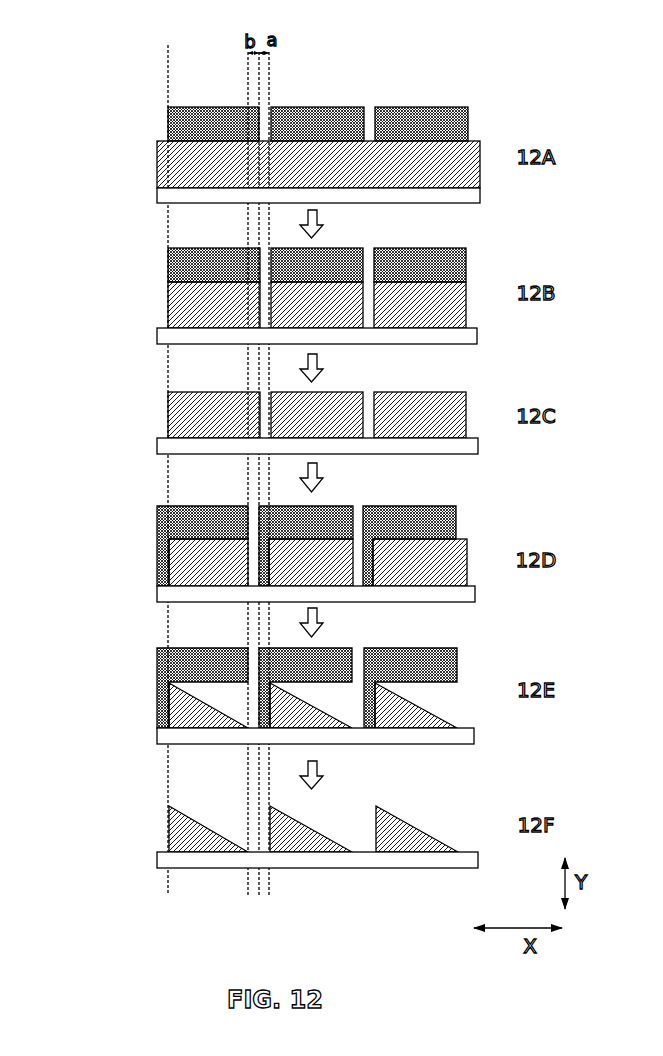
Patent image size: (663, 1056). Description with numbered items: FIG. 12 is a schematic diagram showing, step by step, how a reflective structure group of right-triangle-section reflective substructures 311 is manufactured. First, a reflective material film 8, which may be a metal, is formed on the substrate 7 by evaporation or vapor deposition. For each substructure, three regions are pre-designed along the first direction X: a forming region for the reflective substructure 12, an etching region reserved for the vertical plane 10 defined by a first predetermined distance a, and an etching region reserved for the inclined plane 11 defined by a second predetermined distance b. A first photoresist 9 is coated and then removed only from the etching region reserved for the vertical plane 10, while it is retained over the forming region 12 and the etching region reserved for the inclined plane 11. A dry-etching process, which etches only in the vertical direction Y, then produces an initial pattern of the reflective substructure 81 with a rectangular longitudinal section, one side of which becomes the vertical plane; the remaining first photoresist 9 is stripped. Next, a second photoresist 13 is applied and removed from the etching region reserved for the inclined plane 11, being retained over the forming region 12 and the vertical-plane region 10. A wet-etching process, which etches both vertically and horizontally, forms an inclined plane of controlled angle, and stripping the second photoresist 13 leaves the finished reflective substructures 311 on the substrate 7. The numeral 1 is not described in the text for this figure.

The structure 1 is at (187, 560).
The substrate 7 is at (170, 194).
The reflective material film 8 is at (177, 164).
The first photoresist 9 is at (182, 123).
The etching region reserved for the vertical plane 10 is at (268, 78).
The etching region reserved for the inclined plane 11 is at (253, 77).
The forming region for the reflective substructure 12 is at (195, 85).
The second photoresist 13 is at (190, 523).
The initial pattern of the reflective substructure 81 is at (182, 304).
The reflective substructure 311 is at (190, 703).